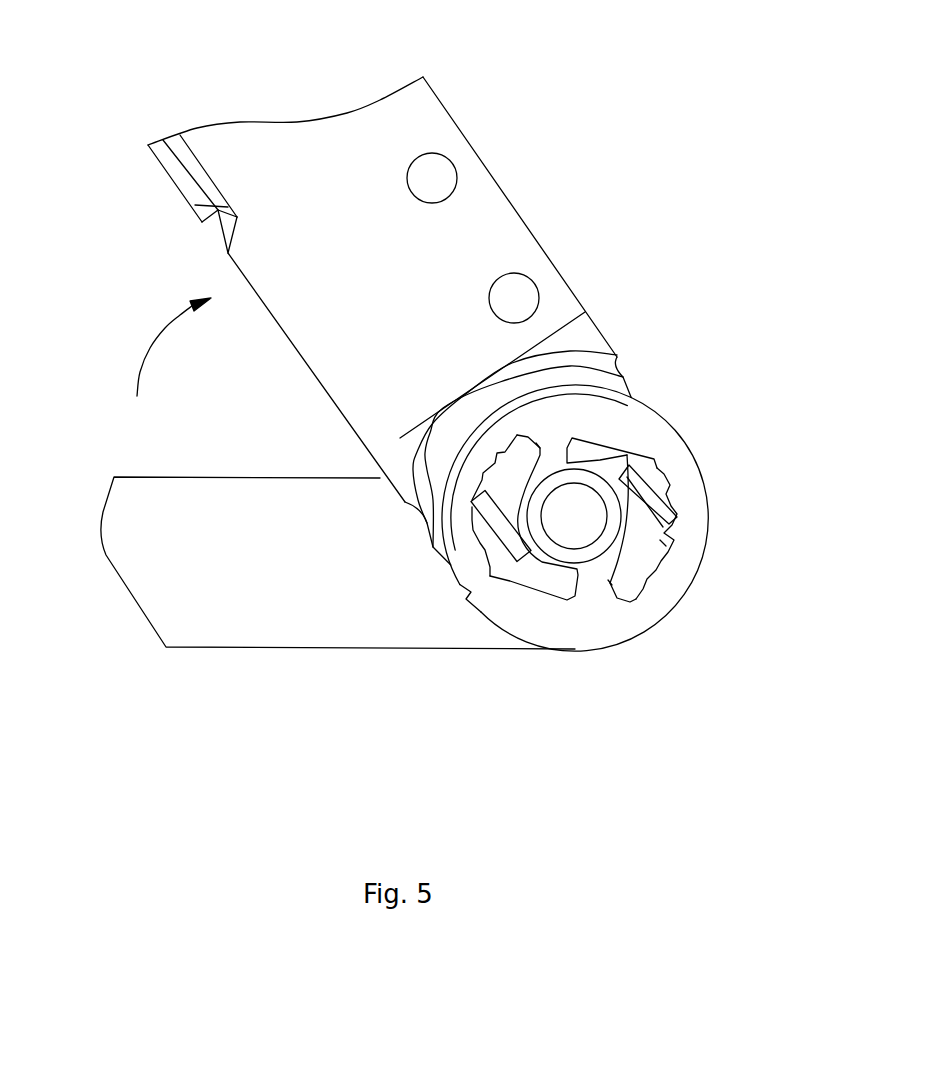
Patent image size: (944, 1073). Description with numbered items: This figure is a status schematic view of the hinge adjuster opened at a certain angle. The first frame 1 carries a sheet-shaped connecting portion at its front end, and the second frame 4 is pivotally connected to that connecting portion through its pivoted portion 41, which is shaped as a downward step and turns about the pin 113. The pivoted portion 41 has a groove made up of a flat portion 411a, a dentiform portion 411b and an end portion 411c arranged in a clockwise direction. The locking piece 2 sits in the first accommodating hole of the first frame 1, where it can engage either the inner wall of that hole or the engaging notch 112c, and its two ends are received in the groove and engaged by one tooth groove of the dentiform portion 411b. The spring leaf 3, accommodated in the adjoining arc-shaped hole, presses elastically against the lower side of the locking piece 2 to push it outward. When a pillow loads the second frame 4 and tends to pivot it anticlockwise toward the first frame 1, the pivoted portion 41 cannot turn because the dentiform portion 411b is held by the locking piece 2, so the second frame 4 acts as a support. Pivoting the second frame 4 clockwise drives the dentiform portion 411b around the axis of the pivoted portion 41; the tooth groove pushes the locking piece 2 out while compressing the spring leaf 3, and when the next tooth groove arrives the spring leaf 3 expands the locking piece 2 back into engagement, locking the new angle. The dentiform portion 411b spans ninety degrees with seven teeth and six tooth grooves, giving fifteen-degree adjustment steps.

The first frame 1 is at (330, 623).
The locking piece 2 is at (540, 452).
The spring leaf 3 is at (633, 579).
The second frame 4 is at (275, 193).
The pivoted portion 41 is at (709, 530).
The pin 113 is at (578, 502).
The flat portion 411a is at (627, 458).
The dentiform portion 411b is at (480, 474).
The end portion 411c is at (535, 443).
The engaging notch 112c is at (662, 542).